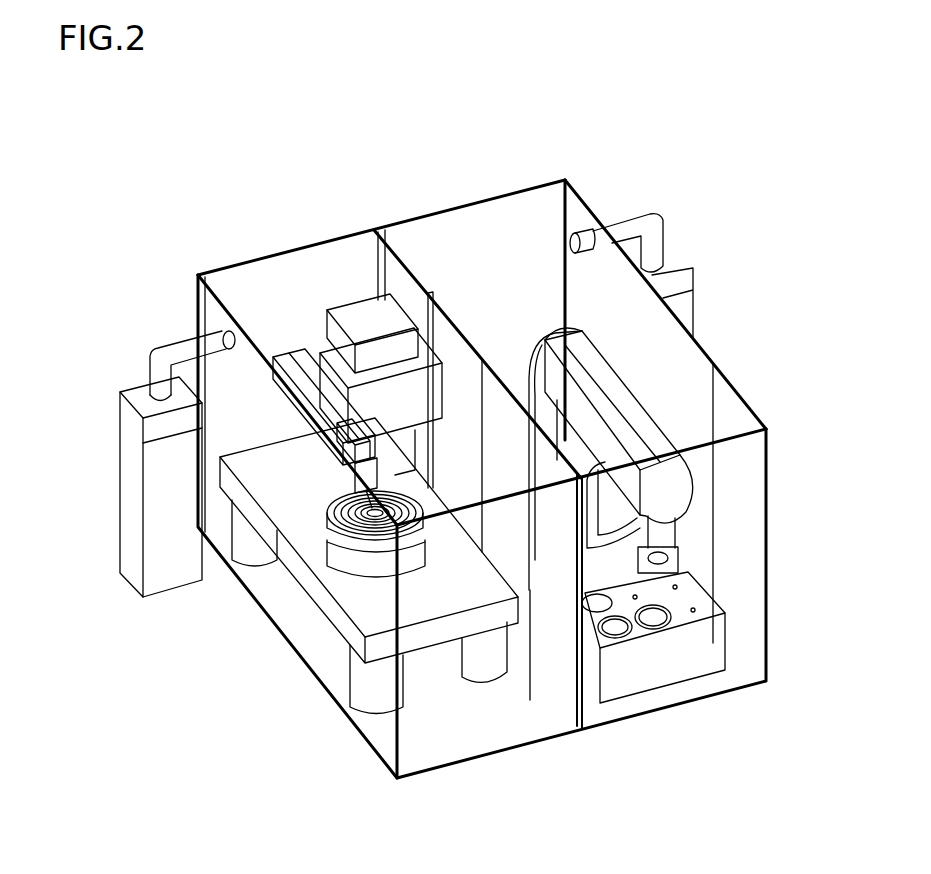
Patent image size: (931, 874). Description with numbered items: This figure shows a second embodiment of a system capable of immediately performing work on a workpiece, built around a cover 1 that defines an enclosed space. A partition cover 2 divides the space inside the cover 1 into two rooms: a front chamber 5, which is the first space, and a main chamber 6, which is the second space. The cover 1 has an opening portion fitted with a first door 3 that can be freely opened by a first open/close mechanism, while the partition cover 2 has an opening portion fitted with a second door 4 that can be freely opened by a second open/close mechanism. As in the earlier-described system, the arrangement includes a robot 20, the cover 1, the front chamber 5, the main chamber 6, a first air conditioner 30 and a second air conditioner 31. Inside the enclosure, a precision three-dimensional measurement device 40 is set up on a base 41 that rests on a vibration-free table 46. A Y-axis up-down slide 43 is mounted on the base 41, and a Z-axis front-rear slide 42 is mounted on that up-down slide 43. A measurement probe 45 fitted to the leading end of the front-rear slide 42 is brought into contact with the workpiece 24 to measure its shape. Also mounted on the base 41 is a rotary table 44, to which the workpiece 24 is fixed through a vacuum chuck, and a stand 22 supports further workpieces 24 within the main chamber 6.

The cover 1 is at (198, 305).
The partition cover 2 is at (403, 280).
The first door 3 is at (738, 417).
The second door 4 is at (470, 365).
The front chamber 5 is at (513, 222).
The main chamber 6 is at (322, 278).
The robot 20 is at (567, 335).
The container stand 22 is at (705, 600).
The workpiece 24 is at (655, 620).
The first air conditioner 30 is at (679, 257).
The second air conditioner 31 is at (143, 393).
The precision three-dimensional measurement device 40 is at (264, 430).
The base 41 is at (357, 643).
The front-rear slide 42 is at (270, 345).
The up-down slide 43 is at (388, 400).
The rotary table 44 is at (407, 563).
The measurement probe 45 is at (330, 497).
The vibration-free table 46 is at (372, 683).